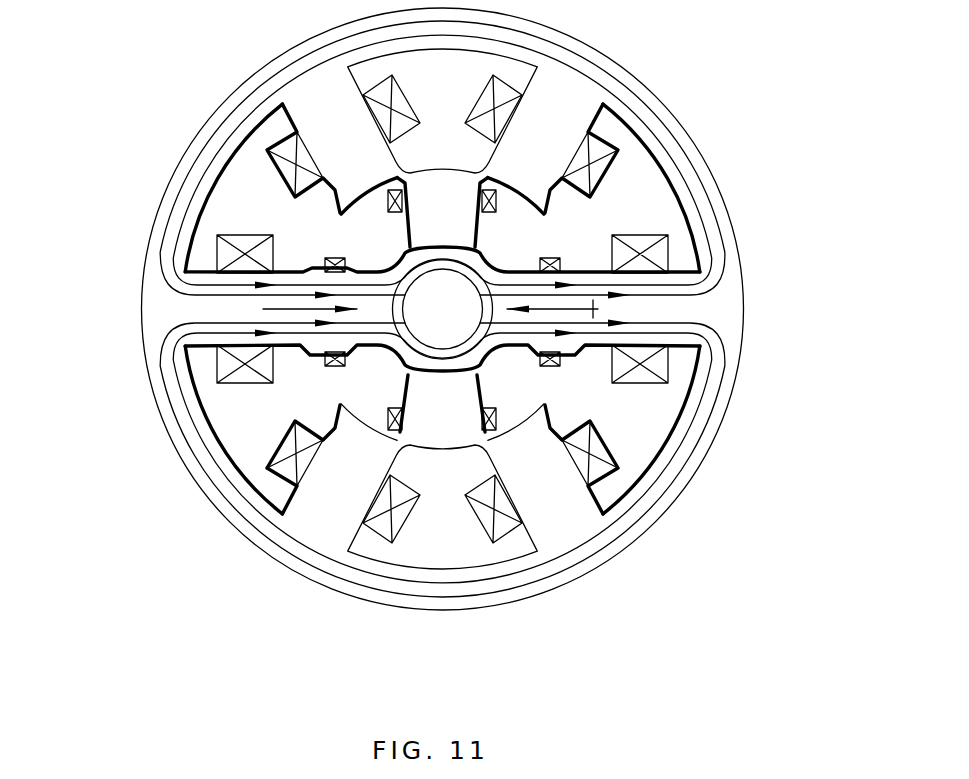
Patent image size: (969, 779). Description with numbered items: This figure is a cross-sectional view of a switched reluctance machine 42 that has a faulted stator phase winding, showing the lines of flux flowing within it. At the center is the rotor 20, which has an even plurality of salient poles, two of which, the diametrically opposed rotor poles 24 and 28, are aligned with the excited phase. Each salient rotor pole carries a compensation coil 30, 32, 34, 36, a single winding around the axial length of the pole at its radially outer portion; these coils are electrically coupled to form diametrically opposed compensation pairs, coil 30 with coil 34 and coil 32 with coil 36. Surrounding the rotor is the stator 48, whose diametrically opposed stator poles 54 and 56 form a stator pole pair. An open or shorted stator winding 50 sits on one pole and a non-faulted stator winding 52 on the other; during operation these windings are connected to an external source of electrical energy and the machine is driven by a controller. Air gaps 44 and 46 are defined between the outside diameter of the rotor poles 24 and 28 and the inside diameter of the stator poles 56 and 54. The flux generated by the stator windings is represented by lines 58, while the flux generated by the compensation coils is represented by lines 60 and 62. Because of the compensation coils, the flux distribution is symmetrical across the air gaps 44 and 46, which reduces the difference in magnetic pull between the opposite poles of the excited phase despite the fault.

The rotor 20 is at (462, 324).
The salient rotor pole 24 is at (558, 256).
The salient rotor pole 28 is at (347, 364).
The compensation coil 30 is at (490, 213).
The compensation coil 32 is at (590, 318).
The compensation coil 34 is at (492, 408).
The compensation coil 36 is at (338, 258).
The switched reluctance machine 42 is at (268, 25).
The air gap 44 is at (660, 455).
The air gap 46 is at (265, 462).
The stator 48 is at (305, 572).
The stator winding 50 is at (218, 238).
The stator winding 52 is at (672, 237).
The stator pole 54 is at (304, 312).
The stator pole 56 is at (668, 388).
The flux lines 58 is at (168, 282).
The flux lines 60 is at (304, 300).
The flux lines 62 is at (658, 395).